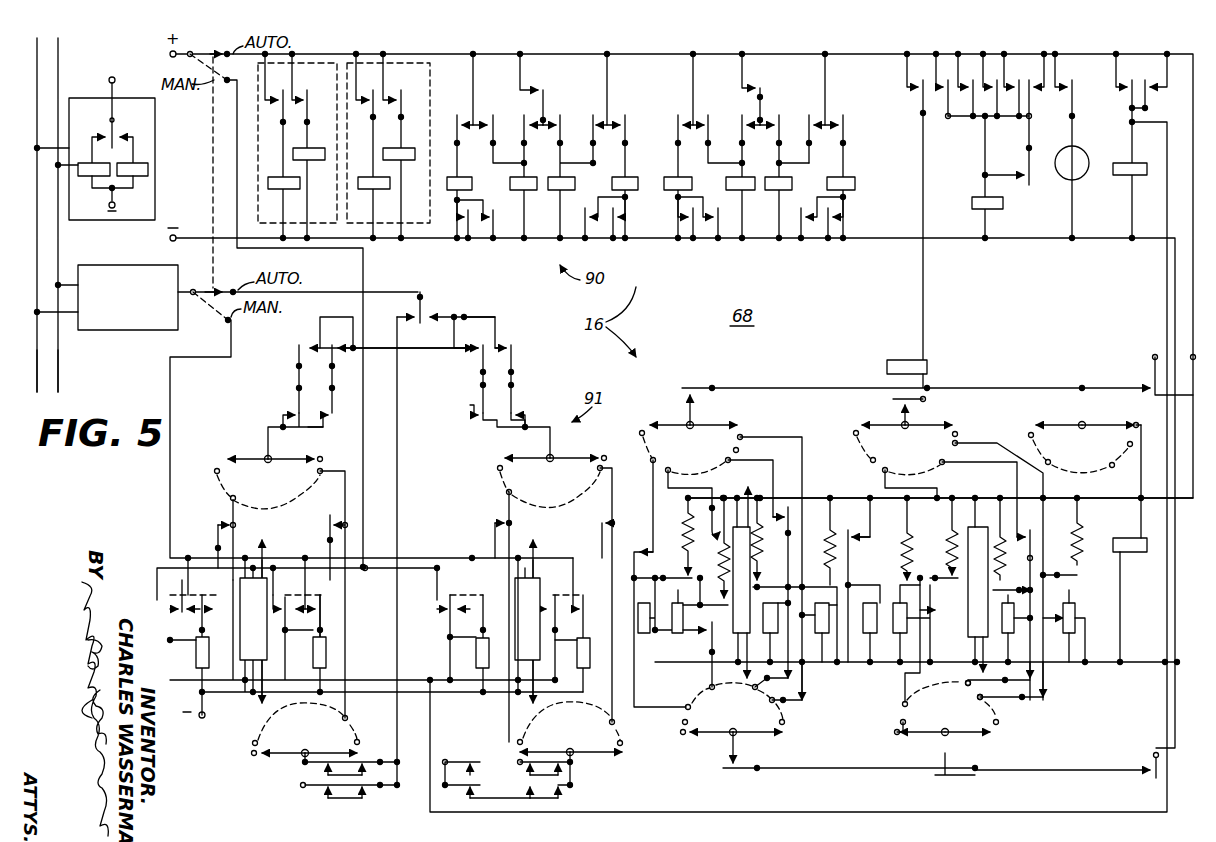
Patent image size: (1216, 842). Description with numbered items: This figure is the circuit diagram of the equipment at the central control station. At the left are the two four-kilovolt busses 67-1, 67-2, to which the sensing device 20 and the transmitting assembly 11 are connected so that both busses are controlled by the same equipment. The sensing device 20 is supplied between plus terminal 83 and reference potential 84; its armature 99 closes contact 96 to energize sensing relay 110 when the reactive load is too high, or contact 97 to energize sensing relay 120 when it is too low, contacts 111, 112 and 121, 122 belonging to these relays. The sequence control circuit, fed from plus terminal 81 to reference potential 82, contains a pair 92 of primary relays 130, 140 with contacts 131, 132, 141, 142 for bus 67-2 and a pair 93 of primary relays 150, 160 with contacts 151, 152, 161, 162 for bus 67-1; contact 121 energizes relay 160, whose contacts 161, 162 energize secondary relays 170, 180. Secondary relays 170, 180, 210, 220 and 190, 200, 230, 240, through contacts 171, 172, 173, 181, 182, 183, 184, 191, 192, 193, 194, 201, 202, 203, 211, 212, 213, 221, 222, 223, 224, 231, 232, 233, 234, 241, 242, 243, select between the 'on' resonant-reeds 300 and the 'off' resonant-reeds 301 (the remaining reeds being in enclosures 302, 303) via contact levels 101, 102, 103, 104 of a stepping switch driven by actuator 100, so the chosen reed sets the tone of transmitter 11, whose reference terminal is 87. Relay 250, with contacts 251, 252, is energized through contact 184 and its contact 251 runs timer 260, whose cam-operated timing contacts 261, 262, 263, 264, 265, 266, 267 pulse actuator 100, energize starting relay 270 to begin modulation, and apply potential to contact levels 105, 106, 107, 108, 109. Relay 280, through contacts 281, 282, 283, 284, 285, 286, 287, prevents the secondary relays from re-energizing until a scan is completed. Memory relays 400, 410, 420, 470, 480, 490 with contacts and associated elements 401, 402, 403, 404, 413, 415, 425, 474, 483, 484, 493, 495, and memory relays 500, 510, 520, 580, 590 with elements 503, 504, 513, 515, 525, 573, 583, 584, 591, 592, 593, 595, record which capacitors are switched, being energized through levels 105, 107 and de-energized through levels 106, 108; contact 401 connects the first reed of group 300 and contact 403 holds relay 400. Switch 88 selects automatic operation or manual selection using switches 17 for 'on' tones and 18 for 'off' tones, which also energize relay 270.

The transmitting assembly 11 is at (121, 267).
The manual switches for 'on' tones 17 is at (213, 591).
The manual switches for 'off' tones 18 is at (462, 576).
The sensing device 20 is at (159, 142).
The four kilovolt bus 67-1 is at (58, 362).
The four kilovolt bus 67-2 is at (37, 370).
The plus terminal 81 is at (170, 55).
The negative or reference potential 82 is at (174, 240).
The plus terminal 83 is at (116, 75).
The negative or reference potential 84 is at (103, 212).
The terminal 87 is at (202, 718).
The switch 88 is at (198, 52).
The pair of primary relays 92 is at (336, 55).
The pair of primary relays 93 is at (428, 55).
The contact 96 is at (100, 136).
The contact 97 is at (118, 140).
The armature 99 is at (106, 120).
The stepping switch actuator 100 is at (929, 366).
The contact level 101 is at (246, 460).
The contact level 102 is at (274, 756).
The contact level 103 is at (563, 462).
The contact level 104 is at (596, 738).
The contact level 105 is at (714, 438).
The contact level 106 is at (724, 733).
The contact level 107 is at (928, 440).
The contact level 108 is at (988, 732).
The contact level 109 is at (1060, 432).
The sensing relay 110 is at (90, 170).
The relay contact 111 is at (370, 96).
The relay contact 112 is at (278, 96).
The sensing relay 120 is at (140, 170).
The contact 121 is at (402, 96).
The relay contact 122 is at (308, 96).
The primary relay 130 is at (282, 182).
The relay contact 131 is at (814, 116).
The relay contact 132 is at (842, 118).
The primary relay 140 is at (308, 152).
The relay contact 141 is at (598, 120).
The relay contact 142 is at (622, 121).
The primary relay 150 is at (372, 182).
The relay contact 151 is at (668, 120).
The relay contact 152 is at (705, 121).
The primary relay 160 is at (398, 152).
The contact 161 is at (464, 115).
The contact 162 is at (488, 113).
The secondary relay 170 is at (462, 182).
The contact 171 is at (458, 222).
The contact 172 is at (292, 406).
The normally closed contact 173 is at (474, 400).
The secondary relay 180 is at (518, 191).
The contact 181 is at (530, 120).
The contact 182 is at (304, 346).
The contact 183 is at (476, 360).
The contact 184 is at (942, 52).
The secondary relay 190 is at (558, 191).
The relay contact 191 is at (556, 121).
The contact 192 is at (337, 354).
The contact 193 is at (504, 340).
The relay contact 194 is at (978, 52).
The secondary relay 200 is at (616, 174).
The relay contact 201 is at (618, 228).
The contact 202 is at (326, 414).
The contact 203 is at (520, 410).
The secondary relay 210 is at (672, 174).
The relay contact 211 is at (686, 230).
The contact 212 is at (316, 768).
The contact 213 is at (544, 767).
The secondary relay 220 is at (730, 182).
The relay contact 221 is at (745, 120).
The contact 222 is at (376, 762).
The contact 223 is at (484, 745).
The relay contact 224 is at (1000, 45).
The secondary relay 230 is at (768, 180).
The relay contact 231 is at (775, 121).
The contact 232 is at (369, 787).
The contact 233 is at (466, 794).
The relay contact 234 is at (1022, 88).
The secondary relay 240 is at (830, 182).
The relay contact 241 is at (830, 236).
The contact 242 is at (314, 792).
The contact 243 is at (550, 797).
The relay 250 is at (980, 197).
The contact 251 is at (1060, 80).
The relay contact 252 is at (1032, 56).
The timer unit 260 is at (1068, 166).
The timing contact 261 is at (914, 90).
The timing contact 262 is at (1128, 98).
The timing contact 263 is at (1150, 93).
The timing contact 264 is at (428, 316).
The timing contact 265 is at (401, 316).
The timing contact 266 is at (1146, 380).
The timing contact 267 is at (1152, 758).
The starting relay 270 is at (1122, 176).
The relay 280 is at (1134, 538).
The normally closed contact 281 is at (538, 82).
The contact 282 is at (490, 228).
The contact 283 is at (585, 232).
The normally closed contact 284 is at (1026, 174).
The contact 285 is at (754, 68).
The contact 286 is at (726, 232).
The contact 287 is at (801, 230).
The group of resonant-reeds 300 is at (198, 644).
The group of resonant-reeds 301 is at (476, 644).
The enclosure 302 is at (257, 619).
The enclosure 303 is at (531, 625).
The memory relay 400 is at (820, 625).
The memory contact 401 is at (331, 516).
The contact 402 is at (592, 522).
The contact 403 is at (830, 586).
The contact 404 is at (808, 584).
The relay coil 410 is at (777, 626).
The resistor 413 is at (770, 580).
The contact 415 is at (796, 699).
The relay coil 420-470 420 is at (746, 582).
The contact 425 is at (796, 681).
The resistor 470 is at (724, 547).
The contact 474 is at (706, 510).
The rectifier 480 is at (689, 611).
The contact 483 is at (706, 602).
The contact 484 is at (636, 552).
The relay coil 490 is at (663, 629).
The resistor 493 is at (690, 570).
The contact 495 is at (706, 640).
The memory relay 500 is at (1078, 604).
The resistor 503 is at (1078, 574).
The contact 504 is at (1030, 526).
The relay coil 510 is at (1014, 630).
The resistor 513 is at (998, 594).
The contact 515 is at (1050, 700).
The relay coil 520-570 520 is at (982, 584).
The contact 525 is at (1038, 683).
The resistor 573 is at (930, 542).
The relay coil 580 is at (901, 644).
The resistor 583 is at (958, 574).
The contact 584 is at (851, 537).
The relay coil 590 is at (866, 625).
The contact 591 is at (227, 520).
The contact 592 is at (496, 508).
The resistor 593 is at (905, 582).
The contact 595 is at (939, 619).